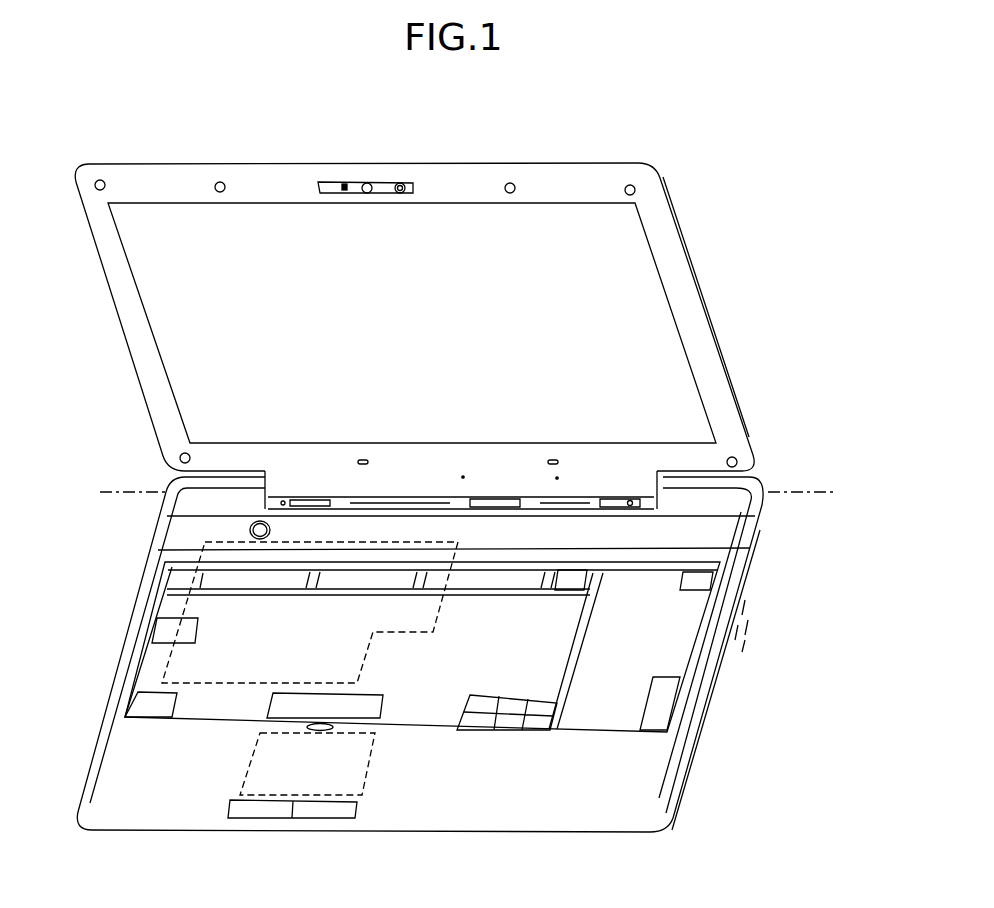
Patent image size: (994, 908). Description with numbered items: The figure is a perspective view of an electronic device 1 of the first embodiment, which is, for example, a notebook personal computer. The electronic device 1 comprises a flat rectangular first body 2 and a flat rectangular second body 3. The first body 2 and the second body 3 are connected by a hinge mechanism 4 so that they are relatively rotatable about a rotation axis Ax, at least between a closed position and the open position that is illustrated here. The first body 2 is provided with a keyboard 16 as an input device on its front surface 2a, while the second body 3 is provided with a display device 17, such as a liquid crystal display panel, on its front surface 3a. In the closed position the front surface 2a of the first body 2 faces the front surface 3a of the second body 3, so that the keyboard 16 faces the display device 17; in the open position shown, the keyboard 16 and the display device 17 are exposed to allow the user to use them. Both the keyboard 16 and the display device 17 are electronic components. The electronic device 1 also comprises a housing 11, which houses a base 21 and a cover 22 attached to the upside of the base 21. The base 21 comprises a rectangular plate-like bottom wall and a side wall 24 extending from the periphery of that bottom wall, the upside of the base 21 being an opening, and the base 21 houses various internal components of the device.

The electronic device 1 is at (664, 129).
The first body 2 is at (746, 596).
The front surface 2a is at (650, 787).
The second body 3 is at (696, 279).
The front surface 3a is at (665, 232).
The hinge mechanism 4 is at (266, 491).
The housing 11 is at (127, 657).
The keyboard 16 is at (507, 723).
The display device 17 is at (545, 227).
The base 21 is at (720, 673).
The cover 22 is at (660, 753).
The side wall 24 is at (728, 638).
The rotation axis Ax is at (800, 491).